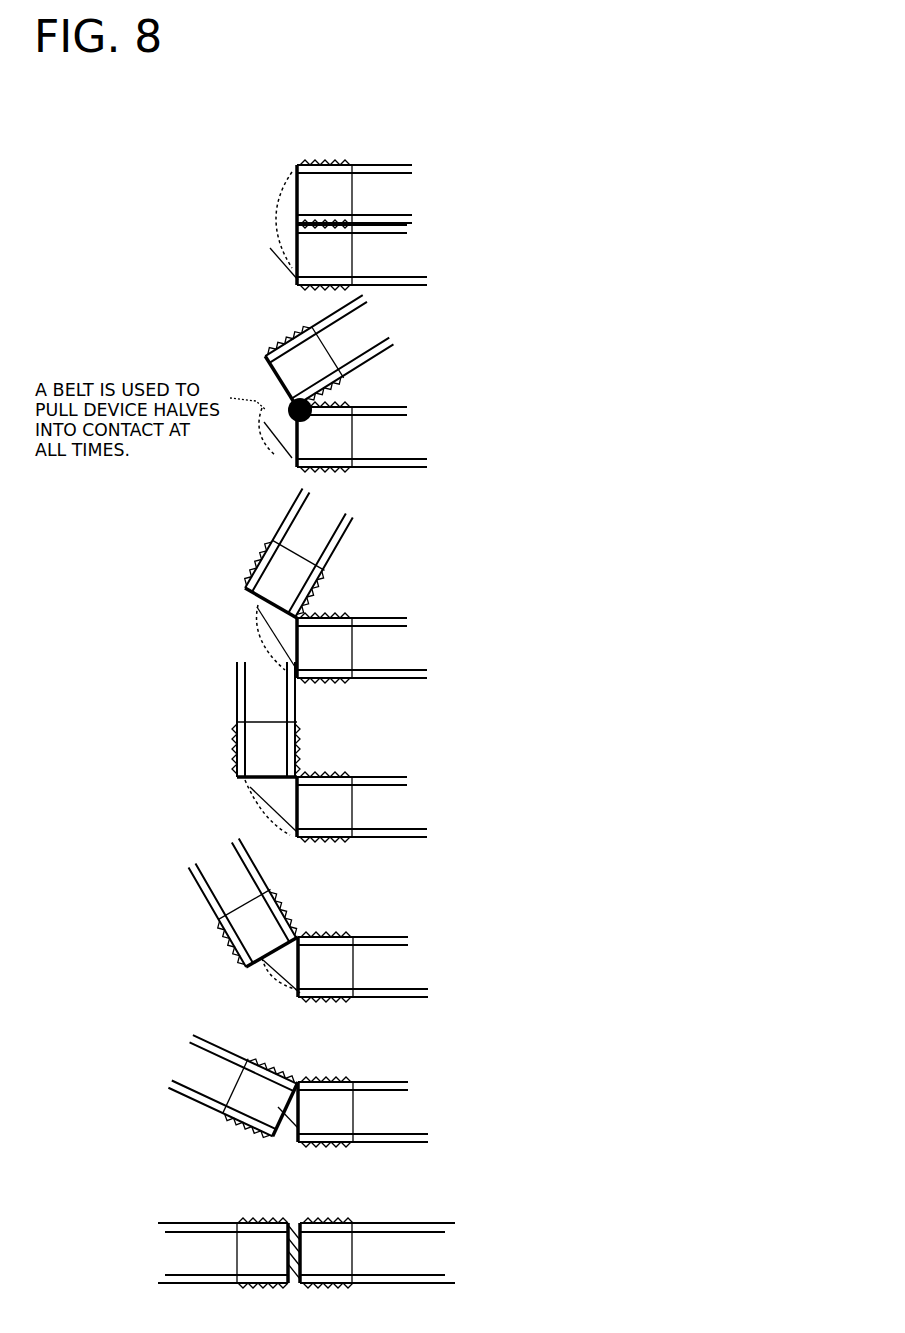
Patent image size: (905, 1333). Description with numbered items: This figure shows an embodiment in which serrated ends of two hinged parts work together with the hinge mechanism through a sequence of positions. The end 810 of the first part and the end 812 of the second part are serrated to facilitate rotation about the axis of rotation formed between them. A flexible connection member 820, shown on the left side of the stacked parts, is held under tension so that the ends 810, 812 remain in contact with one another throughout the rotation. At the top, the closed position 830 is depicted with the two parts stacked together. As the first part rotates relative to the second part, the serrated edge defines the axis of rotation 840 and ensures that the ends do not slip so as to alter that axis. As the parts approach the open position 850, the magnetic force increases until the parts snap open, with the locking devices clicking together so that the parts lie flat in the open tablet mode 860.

The end of first part 810 is at (318, 160).
The end of second part 812 is at (302, 279).
The flexible connection member 820 is at (278, 236).
The closed position 830 is at (375, 214).
The axis of rotation 840 is at (306, 404).
The position approaching open 850 is at (426, 1066).
The open tablet mode 860 is at (443, 1206).